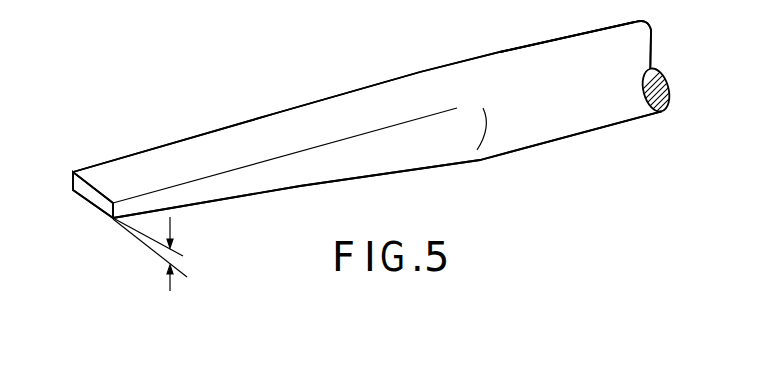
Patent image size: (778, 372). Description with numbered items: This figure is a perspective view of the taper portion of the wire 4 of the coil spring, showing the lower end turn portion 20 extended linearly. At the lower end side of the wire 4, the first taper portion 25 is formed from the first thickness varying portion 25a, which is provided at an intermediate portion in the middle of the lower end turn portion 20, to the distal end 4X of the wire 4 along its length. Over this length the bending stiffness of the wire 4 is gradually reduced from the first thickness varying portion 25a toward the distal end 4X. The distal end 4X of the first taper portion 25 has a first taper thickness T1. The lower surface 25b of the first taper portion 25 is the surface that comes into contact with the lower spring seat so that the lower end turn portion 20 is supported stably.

The first taper portion 25 is at (248, 128).
The first thickness varying portion 25a is at (461, 88).
The lower surface 25b is at (255, 198).
The distal end 4X is at (88, 195).
The lower end turn portion 20 is at (508, 152).
The wire 4 is at (602, 121).
The first taper thickness T1 is at (174, 257).